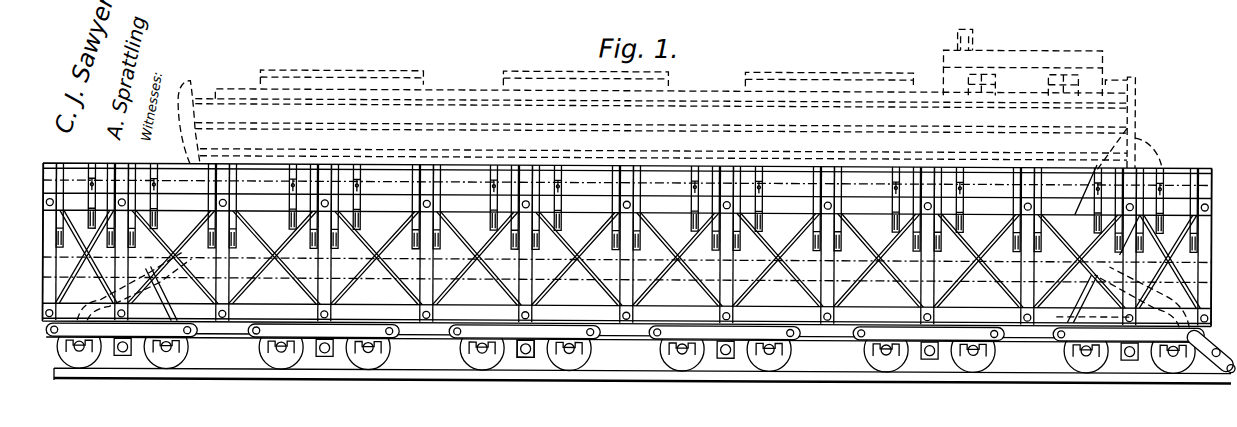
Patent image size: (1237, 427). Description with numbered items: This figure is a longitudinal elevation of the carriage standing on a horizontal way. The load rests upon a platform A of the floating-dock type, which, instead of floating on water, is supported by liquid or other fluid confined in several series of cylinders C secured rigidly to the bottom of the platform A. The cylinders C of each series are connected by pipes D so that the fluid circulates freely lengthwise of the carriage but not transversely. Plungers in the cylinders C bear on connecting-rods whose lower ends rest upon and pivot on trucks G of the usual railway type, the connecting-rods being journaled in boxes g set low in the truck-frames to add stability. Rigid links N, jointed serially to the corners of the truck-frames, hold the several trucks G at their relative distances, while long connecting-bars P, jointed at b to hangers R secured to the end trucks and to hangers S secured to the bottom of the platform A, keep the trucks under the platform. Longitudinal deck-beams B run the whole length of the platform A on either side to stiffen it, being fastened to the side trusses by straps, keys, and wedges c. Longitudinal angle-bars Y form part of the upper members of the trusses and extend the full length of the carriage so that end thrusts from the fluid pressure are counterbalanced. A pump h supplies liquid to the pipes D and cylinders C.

The platform A is at (638, 274).
The deck-beams B is at (633, 176).
The cylinders C is at (1119, 240).
The pipes D is at (627, 259).
The trucks G is at (842, 349).
The rigid links N is at (625, 347).
The connecting-bars P is at (627, 244).
The hangers R is at (621, 295).
The hangers S is at (677, 259).
The longitudinal angle-bars Y is at (222, 346).
The joint b is at (626, 278).
The wedges c is at (626, 218).
The boxes g is at (529, 356).
The pump h is at (1112, 149).